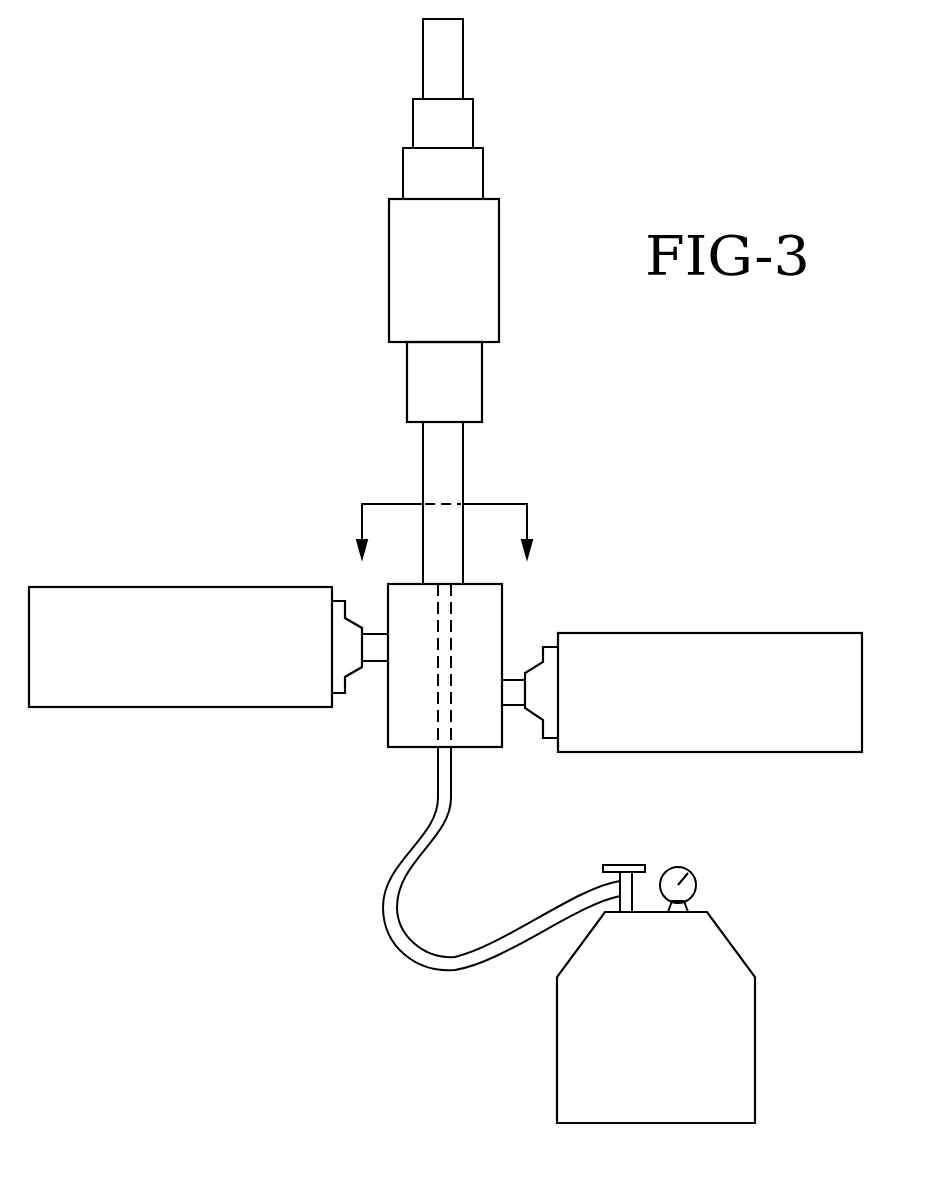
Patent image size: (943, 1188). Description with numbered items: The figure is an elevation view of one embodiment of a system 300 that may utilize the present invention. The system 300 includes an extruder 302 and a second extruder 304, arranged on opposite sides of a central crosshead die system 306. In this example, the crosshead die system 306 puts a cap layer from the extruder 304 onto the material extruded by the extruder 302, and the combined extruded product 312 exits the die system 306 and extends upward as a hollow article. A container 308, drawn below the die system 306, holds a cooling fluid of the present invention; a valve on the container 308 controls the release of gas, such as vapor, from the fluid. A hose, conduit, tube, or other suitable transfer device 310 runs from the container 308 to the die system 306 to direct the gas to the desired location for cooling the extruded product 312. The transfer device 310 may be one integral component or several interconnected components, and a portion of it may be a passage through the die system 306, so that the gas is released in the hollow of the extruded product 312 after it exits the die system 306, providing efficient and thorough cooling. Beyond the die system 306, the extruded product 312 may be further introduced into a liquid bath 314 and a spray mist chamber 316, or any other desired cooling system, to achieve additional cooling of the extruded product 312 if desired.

The system 300 is at (201, 283).
The extruder 302 is at (684, 711).
The extruder 304 is at (153, 664).
The crosshead die system 306 is at (388, 723).
The container 308 is at (629, 1034).
The transfer device 310 is at (397, 952).
The extruded product 312 is at (463, 50).
The liquid bath 314 is at (417, 399).
The spray mist chamber 316 is at (417, 288).